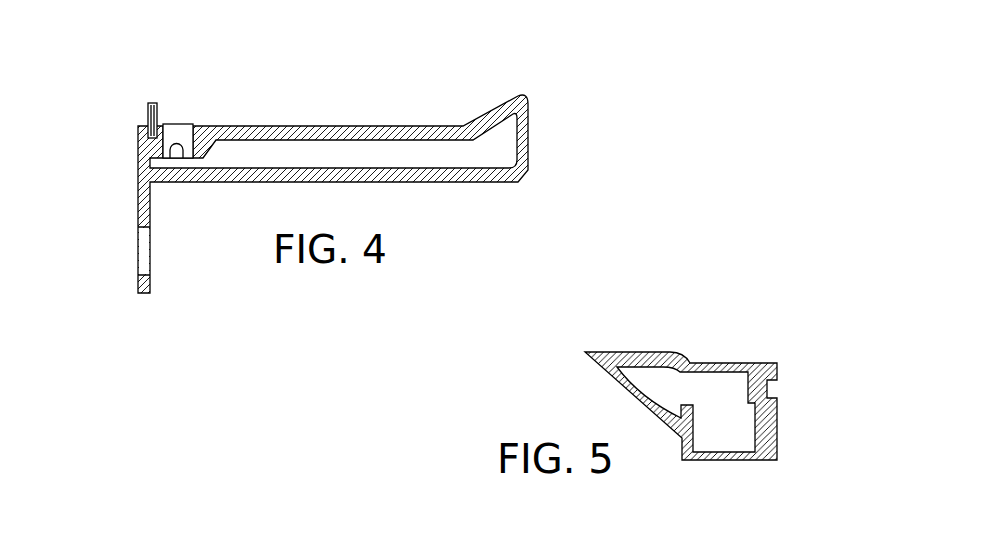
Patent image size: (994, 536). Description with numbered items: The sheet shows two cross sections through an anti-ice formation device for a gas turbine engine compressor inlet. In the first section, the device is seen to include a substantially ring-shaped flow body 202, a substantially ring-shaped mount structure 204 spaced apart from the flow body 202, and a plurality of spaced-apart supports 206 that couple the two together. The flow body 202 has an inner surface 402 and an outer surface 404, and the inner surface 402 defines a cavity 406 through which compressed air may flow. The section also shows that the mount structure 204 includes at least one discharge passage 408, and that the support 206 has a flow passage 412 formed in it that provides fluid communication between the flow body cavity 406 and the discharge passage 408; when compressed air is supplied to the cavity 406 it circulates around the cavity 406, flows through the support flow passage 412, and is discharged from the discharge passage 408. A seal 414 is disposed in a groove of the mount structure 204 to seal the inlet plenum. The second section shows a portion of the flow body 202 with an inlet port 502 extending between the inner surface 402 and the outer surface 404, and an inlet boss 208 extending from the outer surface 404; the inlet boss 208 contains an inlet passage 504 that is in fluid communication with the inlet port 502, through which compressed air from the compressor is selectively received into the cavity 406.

In FIG. 4, the flow body 202 is at (520, 97).
In FIG. 4, the mount structure 204 is at (138, 152).
In FIG. 4, the supports 206 is at (282, 128).
In FIG. 5, the inlet boss 208 is at (777, 440).
In FIG. 4, the inner surface 402 is at (507, 160).
In FIG. 4, the outer surface 404 is at (492, 113).
In FIG. 4, the cavity 406 is at (508, 137).
In FIG. 4, the discharge passage 408 is at (177, 168).
In FIG. 4, the flow passage 412 is at (345, 146).
In FIG. 4, the seal 414 is at (177, 127).
In FIG. 5, the inlet port 502 is at (717, 407).
In FIG. 5, the inlet passage 504 is at (715, 443).